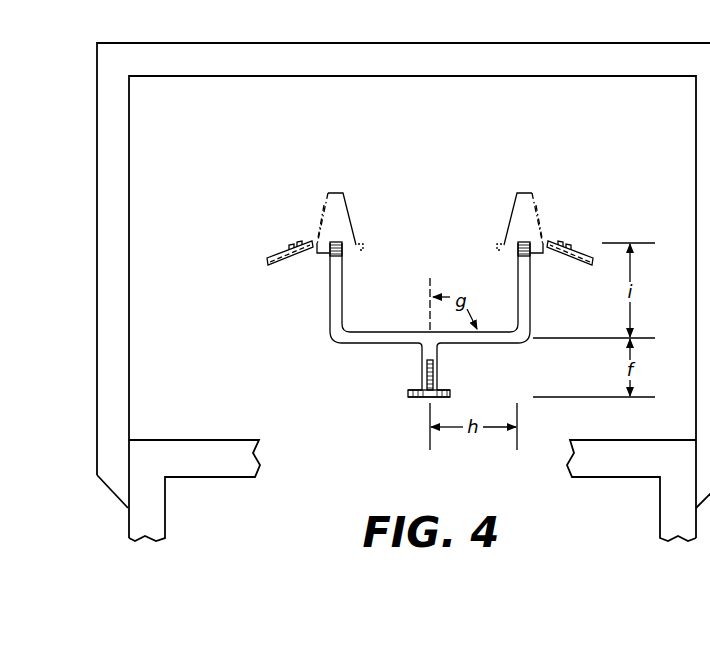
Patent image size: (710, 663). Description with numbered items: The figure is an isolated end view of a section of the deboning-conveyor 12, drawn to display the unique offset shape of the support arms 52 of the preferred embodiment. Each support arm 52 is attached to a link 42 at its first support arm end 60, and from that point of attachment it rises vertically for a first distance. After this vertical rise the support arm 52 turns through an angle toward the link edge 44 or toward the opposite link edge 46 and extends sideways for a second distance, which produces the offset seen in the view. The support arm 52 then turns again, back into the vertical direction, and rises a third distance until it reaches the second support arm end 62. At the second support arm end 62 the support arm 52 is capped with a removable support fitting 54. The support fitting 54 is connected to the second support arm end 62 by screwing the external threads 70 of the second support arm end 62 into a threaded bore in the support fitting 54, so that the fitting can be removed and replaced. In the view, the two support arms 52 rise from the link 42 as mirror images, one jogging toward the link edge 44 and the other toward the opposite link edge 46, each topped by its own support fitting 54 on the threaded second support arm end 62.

The deboning-conveyor 12 is at (328, 352).
The link 42 is at (427, 396).
The link edge 44 is at (450, 392).
The opposite link edge 46 is at (408, 392).
The support arm 52 is at (330, 300).
The support fitting 54 is at (326, 197).
The first support arm end 60 is at (433, 375).
The second support arm end 62 is at (334, 242).
The external threads 70 is at (350, 253).